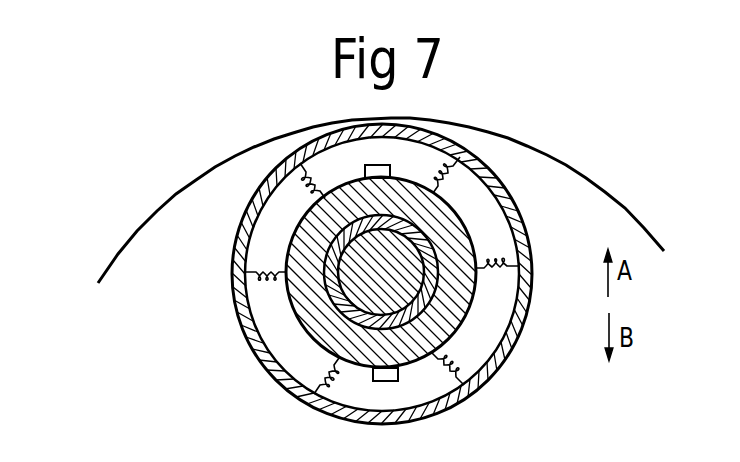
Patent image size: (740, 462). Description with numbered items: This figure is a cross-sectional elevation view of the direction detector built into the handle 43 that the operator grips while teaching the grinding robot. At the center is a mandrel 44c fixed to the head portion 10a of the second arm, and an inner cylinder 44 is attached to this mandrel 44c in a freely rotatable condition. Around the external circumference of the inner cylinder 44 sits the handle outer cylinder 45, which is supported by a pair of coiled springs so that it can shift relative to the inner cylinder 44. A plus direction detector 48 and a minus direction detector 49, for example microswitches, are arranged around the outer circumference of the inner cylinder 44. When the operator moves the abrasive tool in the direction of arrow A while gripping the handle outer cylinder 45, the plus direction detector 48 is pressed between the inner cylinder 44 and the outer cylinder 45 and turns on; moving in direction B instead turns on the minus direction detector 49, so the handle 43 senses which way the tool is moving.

The head portion of No.2 arm 10a is at (603, 187).
The handle 43 is at (243, 332).
The handle outer cylinder 45 is at (467, 167).
The inner cylinder 44 is at (467, 237).
The mandrel 44c is at (408, 292).
The plus direction detector 48 is at (398, 378).
The minus direction detector 49 is at (403, 160).